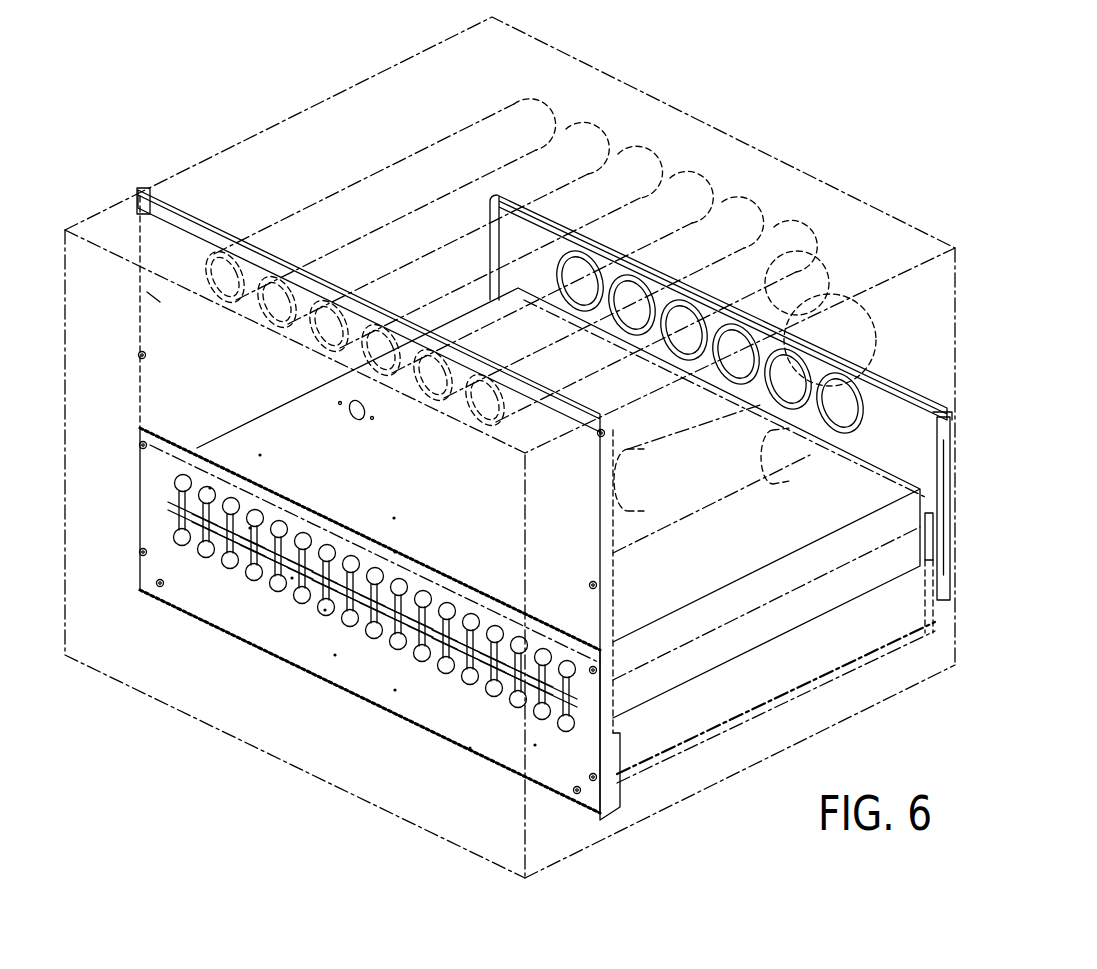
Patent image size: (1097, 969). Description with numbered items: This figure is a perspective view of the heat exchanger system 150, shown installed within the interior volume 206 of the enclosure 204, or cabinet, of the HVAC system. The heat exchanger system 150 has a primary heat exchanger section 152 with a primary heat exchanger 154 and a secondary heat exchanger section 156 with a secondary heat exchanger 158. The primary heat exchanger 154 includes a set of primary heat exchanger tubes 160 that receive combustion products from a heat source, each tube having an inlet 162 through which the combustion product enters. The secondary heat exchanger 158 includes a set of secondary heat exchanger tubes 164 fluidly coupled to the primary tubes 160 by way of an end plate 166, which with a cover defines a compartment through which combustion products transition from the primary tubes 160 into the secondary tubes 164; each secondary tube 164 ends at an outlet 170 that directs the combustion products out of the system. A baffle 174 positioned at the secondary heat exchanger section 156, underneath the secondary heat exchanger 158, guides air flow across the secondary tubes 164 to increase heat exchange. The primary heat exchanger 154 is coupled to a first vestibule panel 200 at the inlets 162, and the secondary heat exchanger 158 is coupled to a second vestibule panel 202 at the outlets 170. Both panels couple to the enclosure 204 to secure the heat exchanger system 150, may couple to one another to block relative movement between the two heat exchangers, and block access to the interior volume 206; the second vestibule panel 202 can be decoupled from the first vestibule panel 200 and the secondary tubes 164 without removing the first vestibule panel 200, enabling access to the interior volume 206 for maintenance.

The heat exchanger system 150 is at (988, 300).
The primary heat exchanger section 152 is at (182, 135).
The primary heat exchanger 154 is at (342, 176).
The secondary heat exchanger section 156 is at (961, 689).
The secondary heat exchanger 158 is at (725, 567).
The primary heat exchanger tubes 160 is at (463, 146).
The inlet 162 is at (321, 352).
The secondary heat exchanger tubes 164 is at (176, 500).
The end plate 166 is at (931, 485).
The outlet 170 is at (323, 601).
The baffle 174 is at (817, 680).
The first vestibule panel 200 is at (147, 292).
The second vestibule panel 202 is at (162, 545).
The enclosure 204 is at (765, 144).
The interior volume 206 is at (793, 191).